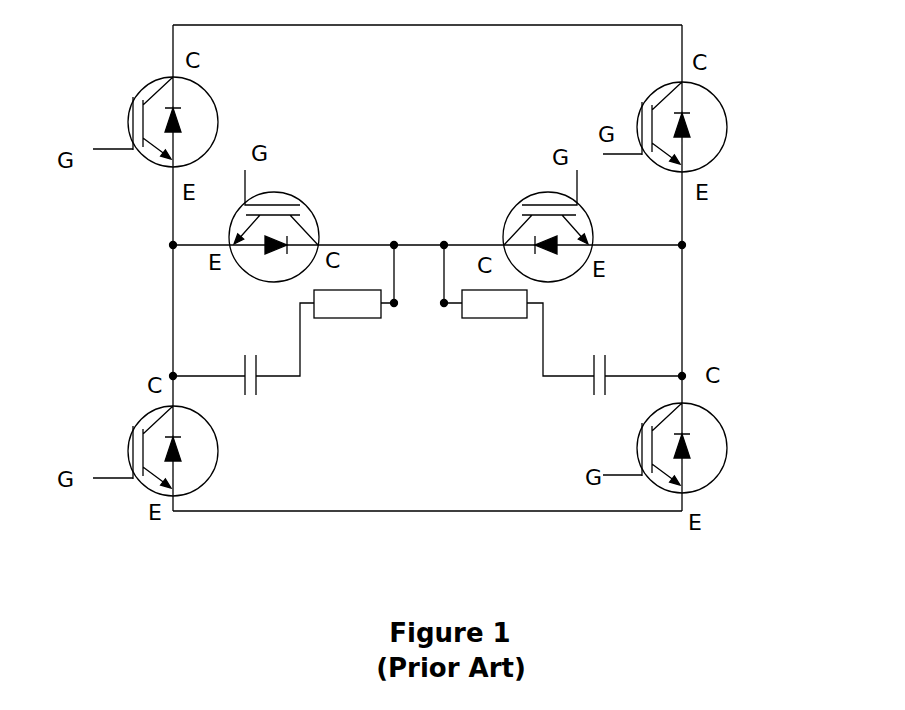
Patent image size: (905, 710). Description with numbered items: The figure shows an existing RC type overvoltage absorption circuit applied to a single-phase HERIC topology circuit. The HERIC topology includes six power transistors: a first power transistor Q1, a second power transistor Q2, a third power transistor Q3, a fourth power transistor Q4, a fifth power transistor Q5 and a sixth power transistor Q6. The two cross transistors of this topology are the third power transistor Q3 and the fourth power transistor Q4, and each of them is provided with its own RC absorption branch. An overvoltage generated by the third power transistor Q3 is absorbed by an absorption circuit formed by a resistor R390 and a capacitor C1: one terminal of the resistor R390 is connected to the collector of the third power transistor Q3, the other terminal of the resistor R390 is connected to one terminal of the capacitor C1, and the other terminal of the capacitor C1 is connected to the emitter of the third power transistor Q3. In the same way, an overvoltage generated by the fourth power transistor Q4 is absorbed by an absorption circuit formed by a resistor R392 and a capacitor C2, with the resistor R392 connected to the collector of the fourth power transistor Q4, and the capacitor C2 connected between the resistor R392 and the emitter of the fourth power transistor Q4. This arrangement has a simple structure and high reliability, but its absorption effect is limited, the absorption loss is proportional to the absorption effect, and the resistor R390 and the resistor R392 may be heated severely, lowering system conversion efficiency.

The first power transistor Q1 is at (155, 142).
The second power transistor Q2 is at (696, 144).
The third power transistor Q3 is at (305, 218).
The fourth power transistor Q4 is at (526, 218).
The fifth power transistor Q5 is at (155, 482).
The sixth power transistor Q6 is at (665, 485).
The resistor R390 is at (325, 310).
The resistor R392 is at (519, 310).
The capacitor C1 is at (220, 398).
The capacitor C2 is at (633, 398).